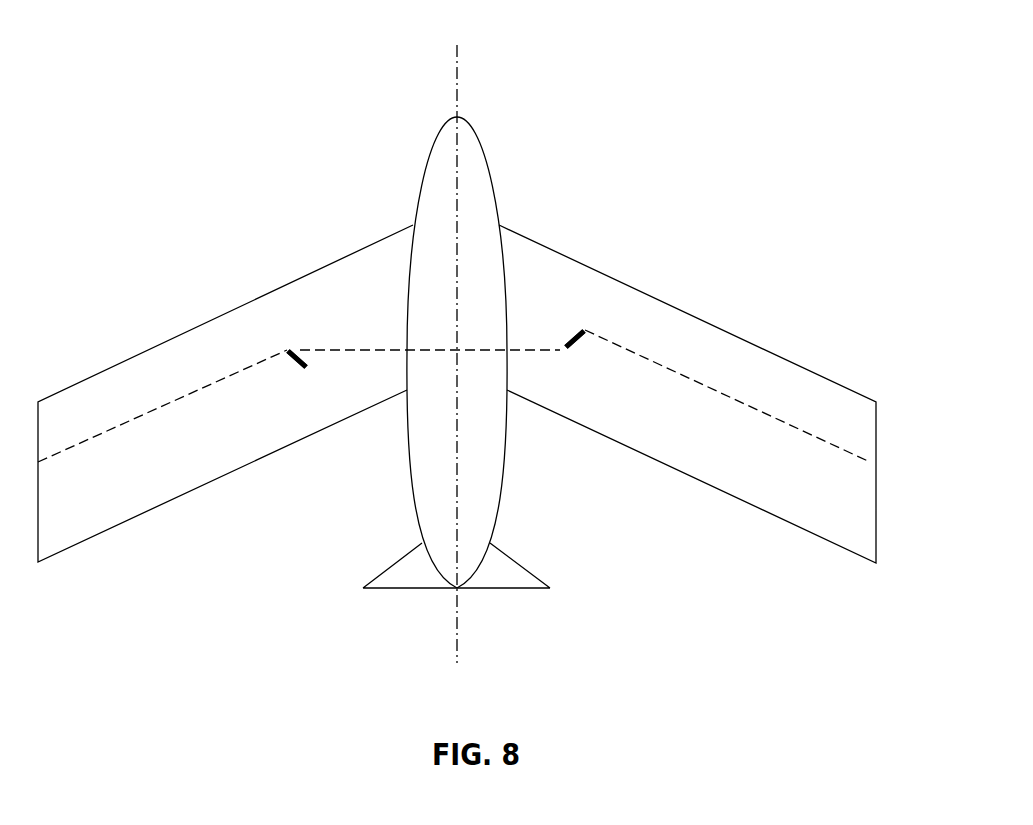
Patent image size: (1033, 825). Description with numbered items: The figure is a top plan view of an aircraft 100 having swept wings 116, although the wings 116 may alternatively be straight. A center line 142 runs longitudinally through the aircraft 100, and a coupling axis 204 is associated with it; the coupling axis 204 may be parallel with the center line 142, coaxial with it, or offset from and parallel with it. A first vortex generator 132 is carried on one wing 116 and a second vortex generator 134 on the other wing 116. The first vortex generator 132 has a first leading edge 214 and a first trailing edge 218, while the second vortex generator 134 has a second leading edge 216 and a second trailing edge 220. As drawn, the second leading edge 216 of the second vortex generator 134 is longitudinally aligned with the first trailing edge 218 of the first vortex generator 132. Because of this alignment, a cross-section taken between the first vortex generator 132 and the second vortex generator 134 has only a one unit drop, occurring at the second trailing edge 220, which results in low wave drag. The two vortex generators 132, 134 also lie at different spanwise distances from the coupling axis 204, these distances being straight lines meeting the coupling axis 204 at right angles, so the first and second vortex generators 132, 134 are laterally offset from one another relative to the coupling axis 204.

The aircraft 100 is at (206, 81).
The wings 116 is at (88, 527).
The first vortex generator 132 is at (565, 350).
The second vortex generator 134 is at (299, 366).
The center line 142 is at (458, 97).
The coupling axis 204 is at (458, 461).
The first leading edge 214 is at (583, 328).
The second leading edge 216 is at (289, 349).
The first trailing edge 218 is at (577, 342).
The second trailing edge 220 is at (305, 372).